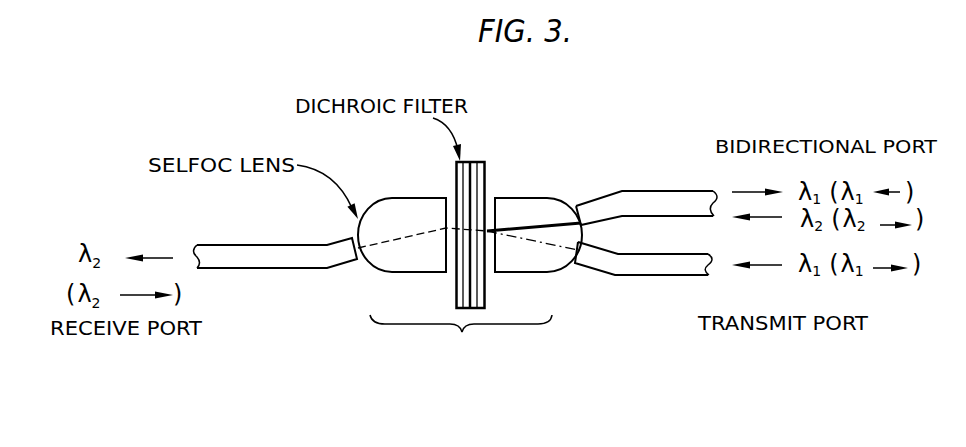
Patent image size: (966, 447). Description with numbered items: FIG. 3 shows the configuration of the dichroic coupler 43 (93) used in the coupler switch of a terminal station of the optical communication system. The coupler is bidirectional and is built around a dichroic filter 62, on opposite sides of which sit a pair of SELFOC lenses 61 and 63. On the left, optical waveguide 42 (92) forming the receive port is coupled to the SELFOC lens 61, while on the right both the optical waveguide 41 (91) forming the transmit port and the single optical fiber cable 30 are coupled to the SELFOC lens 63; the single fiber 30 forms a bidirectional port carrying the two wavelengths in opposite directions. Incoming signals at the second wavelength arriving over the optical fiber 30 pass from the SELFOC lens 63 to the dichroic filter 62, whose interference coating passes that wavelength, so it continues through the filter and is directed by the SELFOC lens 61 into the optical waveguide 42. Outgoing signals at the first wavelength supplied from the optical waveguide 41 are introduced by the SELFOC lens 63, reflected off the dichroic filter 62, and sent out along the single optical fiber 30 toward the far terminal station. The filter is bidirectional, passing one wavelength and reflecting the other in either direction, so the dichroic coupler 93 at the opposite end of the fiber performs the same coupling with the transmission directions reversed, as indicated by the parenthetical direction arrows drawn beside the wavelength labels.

The single optical fiber cable 30 is at (623, 190).
The optical waveguide 41 is at (643, 274).
The optical waveguide 91 is at (612, 275).
The optical waveguide 42 is at (276, 236).
The optical waveguide 92 is at (299, 245).
The dichroic coupler 43 is at (461, 336).
The dichroic coupler 93 is at (461, 323).
The SELFOC lens 61 is at (420, 197).
The dichroic filter 62 is at (487, 170).
The SELFOC lens 63 is at (563, 197).